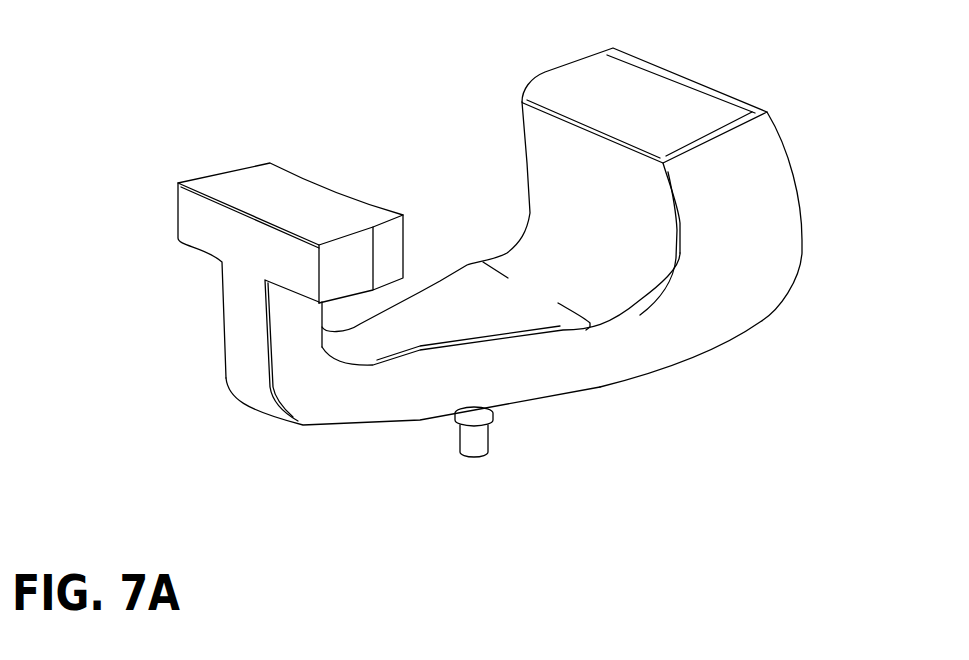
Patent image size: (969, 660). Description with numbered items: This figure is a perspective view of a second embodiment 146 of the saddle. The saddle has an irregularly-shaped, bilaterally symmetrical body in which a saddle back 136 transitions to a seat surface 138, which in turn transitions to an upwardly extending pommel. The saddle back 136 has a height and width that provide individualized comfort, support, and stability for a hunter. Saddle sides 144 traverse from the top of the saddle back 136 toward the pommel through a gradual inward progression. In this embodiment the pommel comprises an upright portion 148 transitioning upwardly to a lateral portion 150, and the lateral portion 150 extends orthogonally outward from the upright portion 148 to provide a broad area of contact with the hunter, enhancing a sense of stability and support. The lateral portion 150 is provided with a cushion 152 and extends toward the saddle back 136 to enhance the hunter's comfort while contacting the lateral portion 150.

The saddle back 136 is at (588, 88).
The seat surface 138 is at (522, 293).
The saddle sides 144 is at (693, 320).
The second embodiment 146 is at (392, 168).
The upright portion 148 is at (283, 312).
The lateral portion 150 is at (205, 230).
The cushion 152 is at (267, 162).